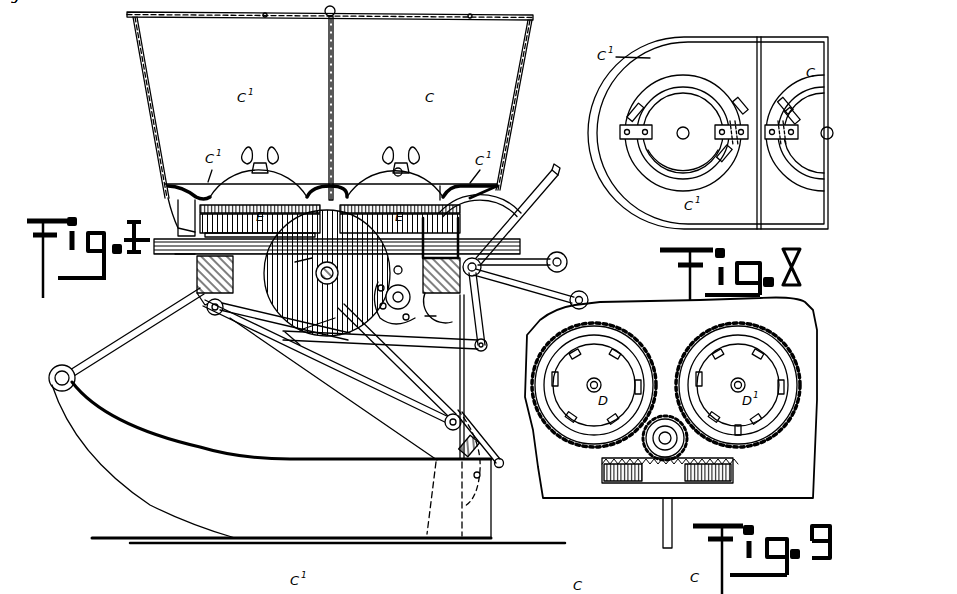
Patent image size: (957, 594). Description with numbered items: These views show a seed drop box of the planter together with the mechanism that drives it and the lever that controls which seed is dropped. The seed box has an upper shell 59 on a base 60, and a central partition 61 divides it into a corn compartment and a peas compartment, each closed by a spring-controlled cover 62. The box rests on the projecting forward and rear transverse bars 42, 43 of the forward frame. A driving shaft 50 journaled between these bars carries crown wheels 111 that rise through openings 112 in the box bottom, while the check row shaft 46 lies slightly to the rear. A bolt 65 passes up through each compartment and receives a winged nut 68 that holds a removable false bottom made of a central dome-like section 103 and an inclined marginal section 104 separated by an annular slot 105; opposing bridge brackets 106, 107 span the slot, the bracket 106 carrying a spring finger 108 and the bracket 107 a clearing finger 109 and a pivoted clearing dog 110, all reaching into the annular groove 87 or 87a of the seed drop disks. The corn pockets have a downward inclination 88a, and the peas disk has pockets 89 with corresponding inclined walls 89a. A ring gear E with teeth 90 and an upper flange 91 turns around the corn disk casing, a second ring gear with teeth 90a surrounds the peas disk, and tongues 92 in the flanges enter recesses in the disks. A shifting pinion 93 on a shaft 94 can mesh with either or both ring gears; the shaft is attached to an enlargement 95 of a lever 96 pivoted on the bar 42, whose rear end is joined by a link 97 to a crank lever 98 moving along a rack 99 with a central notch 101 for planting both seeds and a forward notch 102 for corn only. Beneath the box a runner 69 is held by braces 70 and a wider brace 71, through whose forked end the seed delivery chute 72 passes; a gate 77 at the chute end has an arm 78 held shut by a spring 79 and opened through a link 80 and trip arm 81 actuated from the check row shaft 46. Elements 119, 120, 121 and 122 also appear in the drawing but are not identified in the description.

In FIG. 4, the forward transverse bar 42 is at (206, 310).
In FIG. 4, the rear transverse bar 43 is at (475, 278).
In FIG. 4, the check row shaft 46 is at (385, 322).
In FIG. 4, the driving shaft 50 is at (287, 341).
In FIG. 9, the driving shaft 50 is at (663, 540).
In FIG. 4, the upper shell 59 is at (514, 130).
In FIG. 4, the base 60 is at (258, 253).
In FIG. 4, the partition 61 is at (334, 107).
In FIG. 8, the partition 61 is at (762, 204).
In FIG. 4, the cover 62 is at (265, 18).
In FIG. 4, the bolt 65 is at (396, 165).
In FIG. 9, the bolt 65 is at (587, 386).
In FIG. 4, the winged nut 68 is at (270, 150).
In FIG. 4, the runner 69 is at (308, 462).
In FIG. 4, the brace 70 is at (118, 335).
In FIG. 4, the wider brace 71 is at (465, 378).
In FIG. 4, the seed delivery chute 72 is at (418, 446).
In FIG. 4, the gate 77 is at (482, 497).
In FIG. 4, the outwardly extending arm 78 is at (486, 470).
In FIG. 4, the spring 79 is at (485, 448).
In FIG. 4, the link 80 is at (474, 432).
In FIG. 4, the trip arm 81 is at (340, 270).
In FIG. 9, the annular groove 87 is at (628, 368).
In FIG. 9, the annular groove 87a is at (708, 362).
In FIG. 9, the downward inclination 88a is at (615, 350).
In FIG. 9, the pocket 89 is at (762, 420).
In FIG. 9, the inclined wall 89a is at (740, 352).
In FIG. 4, the teeth 90 is at (240, 235).
In FIG. 4, the peripheral teeth 90a is at (480, 213).
In FIG. 4, the upper flange 91 is at (301, 252).
In FIG. 9, the tongue 92 is at (752, 462).
In FIG. 4, the shifting pinion 93 is at (488, 290).
In FIG. 9, the shifting pinion 93 is at (680, 441).
In FIG. 9, the shaft 94 is at (650, 445).
In FIG. 4, the enlargement 95 is at (312, 332).
In FIG. 4, the lever 96 is at (385, 341).
In FIG. 4, the link 97 is at (484, 322).
In FIG. 4, the crank lever 98 is at (495, 190).
In FIG. 4, the rack 99 is at (518, 212).
In FIG. 4, the central notch 101 is at (498, 186).
In FIG. 4, the forward notch 102 is at (440, 196).
In FIG. 4, the dome-like section 103 is at (283, 190).
In FIG. 8, the dome-like section 103 is at (738, 133).
In FIG. 4, the marginal section 104 is at (172, 200).
In FIG. 8, the marginal section 104 is at (805, 40).
In FIG. 4, the annular slot 105 is at (188, 218).
In FIG. 8, the annular slot 105 is at (690, 78).
In FIG. 8, the bridge bracket 106 is at (630, 140).
In FIG. 8, the opposing bridge bracket 107 is at (745, 111).
In FIG. 8, the spring finger 108 is at (636, 106).
In FIG. 8, the spring finger 109 is at (727, 164).
In FIG. 8, the clearing dog 110 is at (737, 96).
In FIG. 4, the crown wheel 111 is at (272, 320).
In FIG. 9, the crown wheel 111 is at (646, 478).
In FIG. 9, the opening 112 is at (735, 481).
In FIG. 4, the plate 119 is at (180, 258).
In FIG. 4, the plate 120 is at (198, 262).
In FIG. 4, the rod 121 is at (560, 254).
In FIG. 4, the rod 122 is at (586, 294).
In FIG. 4, the ring gear E is at (330, 221).